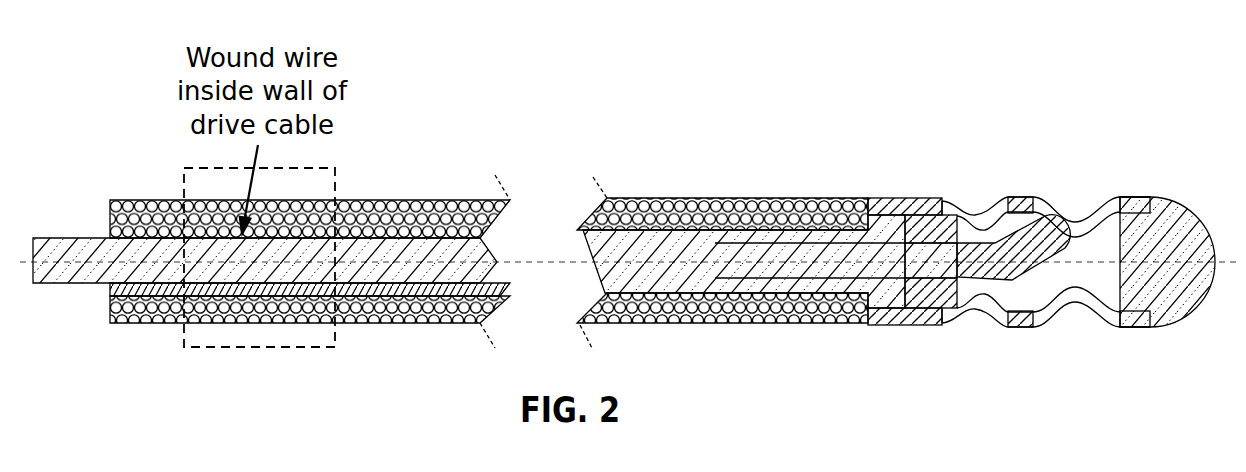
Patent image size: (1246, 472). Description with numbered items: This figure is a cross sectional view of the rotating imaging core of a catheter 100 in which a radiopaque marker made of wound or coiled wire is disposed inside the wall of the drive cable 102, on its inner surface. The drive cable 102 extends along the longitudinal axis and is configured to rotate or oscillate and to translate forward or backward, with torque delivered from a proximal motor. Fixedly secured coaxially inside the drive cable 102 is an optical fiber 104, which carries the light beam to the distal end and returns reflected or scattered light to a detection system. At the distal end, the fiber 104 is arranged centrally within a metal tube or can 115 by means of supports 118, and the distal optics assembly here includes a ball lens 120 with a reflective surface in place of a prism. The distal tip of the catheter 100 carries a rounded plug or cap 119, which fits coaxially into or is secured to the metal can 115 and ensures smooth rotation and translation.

The catheter 100 is at (613, 75).
The drive cable 102 is at (117, 198).
The optical fiber 104 is at (438, 263).
The metal tube or can 115 is at (928, 197).
The supports 118 is at (952, 294).
The rounded plug or cap 119 is at (1167, 232).
The ball lens 120 is at (1033, 281).